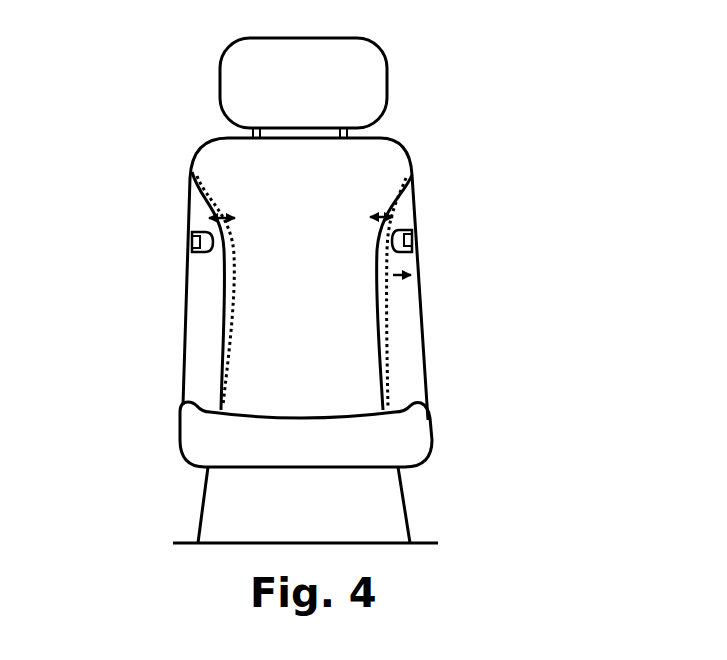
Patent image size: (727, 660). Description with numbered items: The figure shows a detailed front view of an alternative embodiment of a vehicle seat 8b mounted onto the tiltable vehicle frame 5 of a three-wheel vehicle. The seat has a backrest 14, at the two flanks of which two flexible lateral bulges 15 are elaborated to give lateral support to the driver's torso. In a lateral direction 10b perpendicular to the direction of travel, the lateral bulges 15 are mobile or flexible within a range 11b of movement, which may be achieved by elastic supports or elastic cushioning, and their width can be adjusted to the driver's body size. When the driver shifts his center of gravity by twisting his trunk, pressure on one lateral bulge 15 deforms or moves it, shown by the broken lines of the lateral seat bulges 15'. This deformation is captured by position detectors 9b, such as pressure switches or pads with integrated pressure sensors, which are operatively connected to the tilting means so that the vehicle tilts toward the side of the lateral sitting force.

The vehicle seat 8b is at (128, 78).
The backrest 14 is at (362, 173).
The tiltable vehicle frame 5 is at (185, 542).
The lateral bulge 15 is at (314, 291).
The deformed lateral seat bulge 15' is at (315, 292).
The position detector 9b is at (192, 240).
The range of movement 11b is at (207, 216).
The lateral direction 10b is at (415, 272).